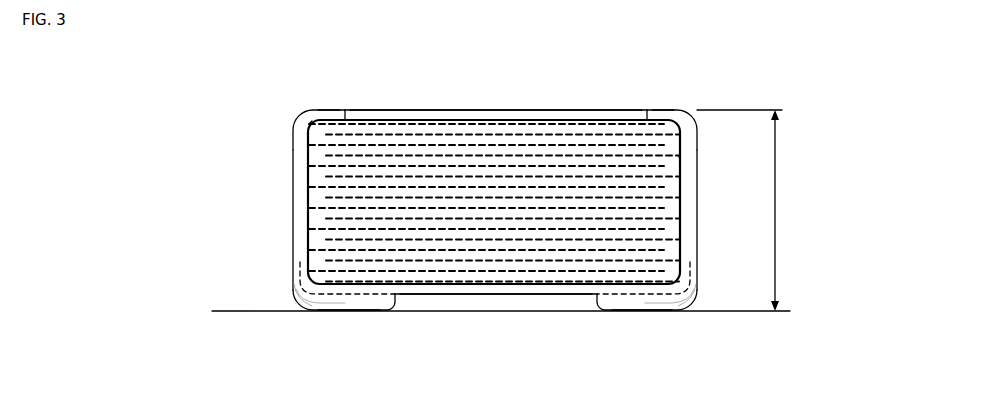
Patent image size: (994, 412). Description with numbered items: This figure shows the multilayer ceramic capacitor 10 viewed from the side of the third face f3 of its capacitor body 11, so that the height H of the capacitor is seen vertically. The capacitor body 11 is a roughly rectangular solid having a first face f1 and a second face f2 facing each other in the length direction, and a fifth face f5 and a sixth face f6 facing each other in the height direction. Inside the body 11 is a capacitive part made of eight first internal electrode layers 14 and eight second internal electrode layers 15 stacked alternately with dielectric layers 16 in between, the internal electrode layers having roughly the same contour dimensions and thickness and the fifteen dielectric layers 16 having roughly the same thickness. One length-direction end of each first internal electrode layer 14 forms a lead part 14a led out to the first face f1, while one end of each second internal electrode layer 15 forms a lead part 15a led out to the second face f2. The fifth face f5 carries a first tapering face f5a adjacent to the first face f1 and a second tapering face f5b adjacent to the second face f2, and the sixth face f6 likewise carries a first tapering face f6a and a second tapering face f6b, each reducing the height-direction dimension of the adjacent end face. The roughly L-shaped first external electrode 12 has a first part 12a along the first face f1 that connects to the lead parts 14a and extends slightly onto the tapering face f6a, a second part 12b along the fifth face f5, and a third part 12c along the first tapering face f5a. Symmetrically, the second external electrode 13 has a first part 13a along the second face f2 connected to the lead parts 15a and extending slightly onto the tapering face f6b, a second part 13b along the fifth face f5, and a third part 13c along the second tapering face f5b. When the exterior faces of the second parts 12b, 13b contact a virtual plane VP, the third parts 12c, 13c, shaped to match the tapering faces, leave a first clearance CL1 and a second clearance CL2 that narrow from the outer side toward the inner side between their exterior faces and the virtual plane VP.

The multilayer ceramic capacitor 10 is at (495, 212).
The capacitor body 11 is at (495, 206).
The first external electrode 12 is at (312, 212).
The first part of first external electrode 12a is at (302, 240).
The second part of first external electrode 12b is at (356, 306).
The third part of first external electrode 12c is at (303, 297).
The second external electrode 13 is at (679, 212).
The first part of second external electrode 13a is at (690, 240).
The second part of second external electrode 13b is at (624, 306).
The third part of second external electrode 13c is at (692, 296).
The first internal electrode layer 14 is at (450, 120).
The lead part of first internal electrode layer 14a is at (312, 146).
The second internal electrode layer 15 is at (542, 130).
The lead part of second internal electrode layer 15a is at (660, 152).
The dielectric layer 16 is at (587, 140).
The first face f1 is at (308, 213).
The second face f2 is at (682, 212).
The third face f3 is at (323, 158).
The fifth face f5 is at (498, 298).
The first tapering face f5a is at (321, 308).
The second tapering face f5b is at (668, 310).
The sixth face f6 is at (500, 110).
The first tapering face on sixth face f6a is at (342, 112).
The second tapering face on sixth face f6b is at (660, 112).
The first clearance CL1 is at (305, 303).
The second clearance CL2 is at (688, 302).
The virtual plane VP is at (489, 312).
The height H is at (744, 210).